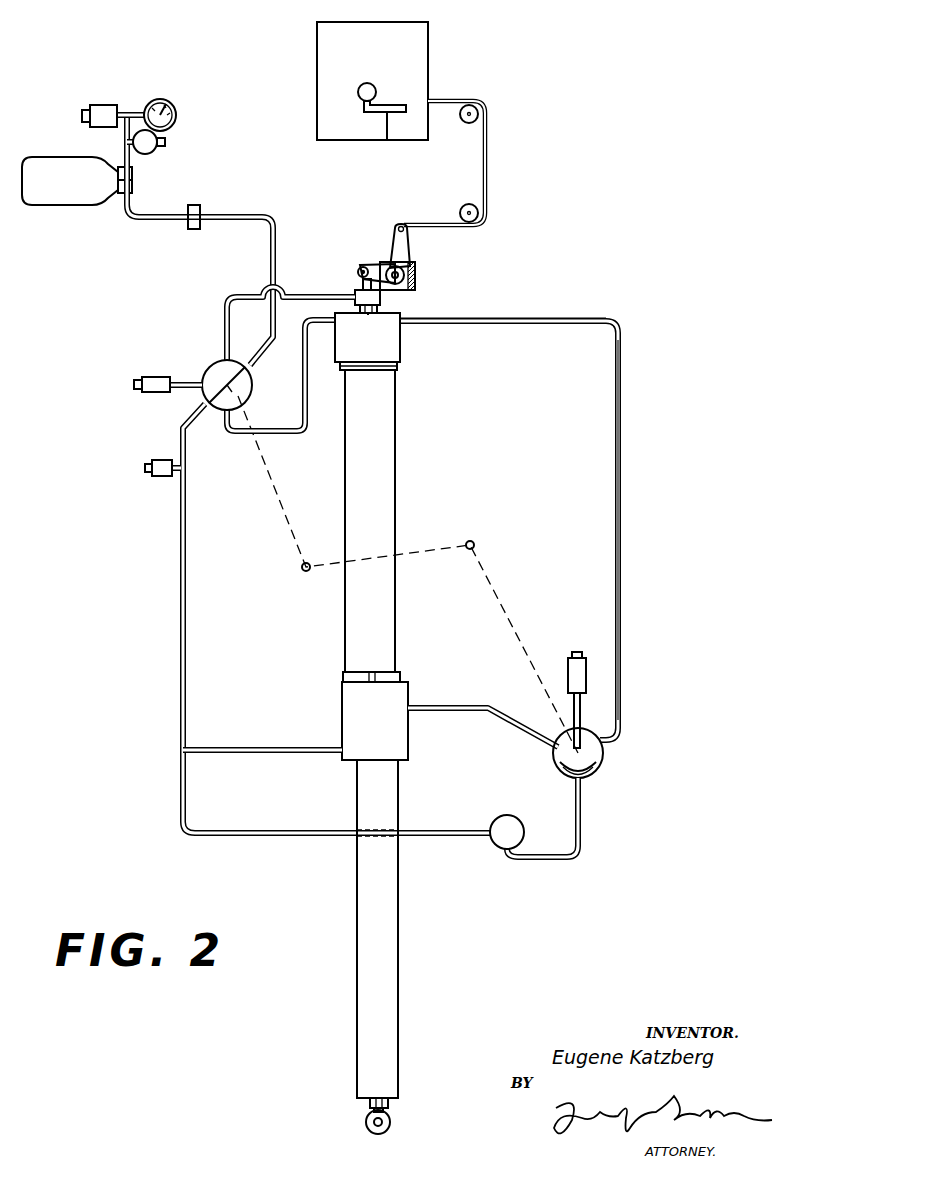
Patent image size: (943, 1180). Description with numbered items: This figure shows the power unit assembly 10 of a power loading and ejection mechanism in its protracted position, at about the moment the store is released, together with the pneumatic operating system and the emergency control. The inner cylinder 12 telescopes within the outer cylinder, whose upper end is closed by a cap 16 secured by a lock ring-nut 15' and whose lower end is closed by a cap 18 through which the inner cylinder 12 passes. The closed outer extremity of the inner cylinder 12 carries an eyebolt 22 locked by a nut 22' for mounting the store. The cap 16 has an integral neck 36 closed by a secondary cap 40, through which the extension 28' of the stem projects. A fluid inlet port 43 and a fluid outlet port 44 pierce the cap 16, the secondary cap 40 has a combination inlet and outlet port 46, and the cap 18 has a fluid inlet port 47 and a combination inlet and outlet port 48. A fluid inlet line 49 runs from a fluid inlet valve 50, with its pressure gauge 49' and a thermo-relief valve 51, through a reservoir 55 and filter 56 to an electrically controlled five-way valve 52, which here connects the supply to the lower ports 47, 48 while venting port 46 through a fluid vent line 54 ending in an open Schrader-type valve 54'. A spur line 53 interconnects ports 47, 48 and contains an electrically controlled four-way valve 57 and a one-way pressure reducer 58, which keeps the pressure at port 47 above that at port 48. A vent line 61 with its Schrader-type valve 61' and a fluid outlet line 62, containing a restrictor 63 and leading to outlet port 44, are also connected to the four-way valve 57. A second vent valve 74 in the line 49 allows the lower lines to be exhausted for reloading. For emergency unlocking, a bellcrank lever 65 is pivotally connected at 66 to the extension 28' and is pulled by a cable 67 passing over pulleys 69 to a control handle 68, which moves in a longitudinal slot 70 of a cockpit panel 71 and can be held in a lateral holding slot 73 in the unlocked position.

The power unit assembly 10 is at (403, 517).
The inner cylinder 12 is at (398, 870).
The lock ring-nut 15' is at (387, 383).
The cap 16 is at (402, 350).
The cap 18 is at (410, 730).
The eyebolt 22 is at (355, 1121).
The nut 22' is at (355, 1103).
The extension of stem 28' is at (394, 285).
The neck 36 is at (371, 313).
The secondary cap 40 is at (360, 293).
The fluid inlet port 43 is at (325, 320).
The fluid outlet port 44 is at (412, 320).
The combination inlet and outlet port 46 is at (332, 297).
The fluid inlet port 47 is at (336, 747).
The combination inlet and outlet port 48 is at (410, 705).
The fluid inlet line 49 is at (200, 468).
The pressure gauge 49' is at (171, 107).
The fluid inlet valve 50 is at (104, 104).
The thermo-relief valve 51 is at (152, 152).
The 5-way valve 52 is at (238, 399).
The spur line 53 is at (325, 832).
The fluid vent line 54 is at (172, 377).
The Schrader-type valve 54' is at (168, 397).
The reservoir 55 is at (62, 197).
The filter 56 is at (199, 229).
The 4-way valve 57 is at (556, 758).
The pressure reducer 58 is at (516, 816).
The vent line 61 is at (568, 682).
The Schrader-type valve 61' is at (565, 666).
The fluid outlet line 62 is at (621, 513).
The restrictor 63 is at (466, 318).
The bellcrank lever 65 is at (405, 242).
The pivotal connection 66 is at (360, 270).
The cable 67 is at (460, 236).
The control handle 68 is at (358, 92).
The pulleys 69 is at (468, 123).
The longitudinal slot 70 is at (385, 136).
The panel 71 is at (317, 67).
The lateral holding slot 73 is at (364, 108).
The second vent valve 74 is at (163, 476).